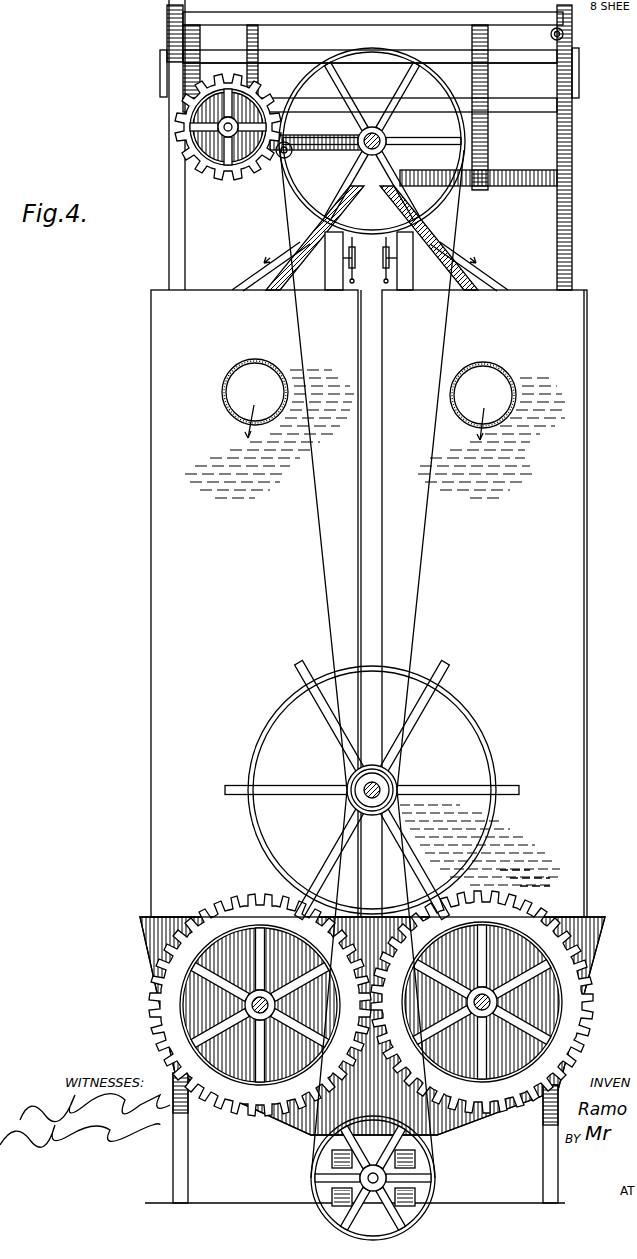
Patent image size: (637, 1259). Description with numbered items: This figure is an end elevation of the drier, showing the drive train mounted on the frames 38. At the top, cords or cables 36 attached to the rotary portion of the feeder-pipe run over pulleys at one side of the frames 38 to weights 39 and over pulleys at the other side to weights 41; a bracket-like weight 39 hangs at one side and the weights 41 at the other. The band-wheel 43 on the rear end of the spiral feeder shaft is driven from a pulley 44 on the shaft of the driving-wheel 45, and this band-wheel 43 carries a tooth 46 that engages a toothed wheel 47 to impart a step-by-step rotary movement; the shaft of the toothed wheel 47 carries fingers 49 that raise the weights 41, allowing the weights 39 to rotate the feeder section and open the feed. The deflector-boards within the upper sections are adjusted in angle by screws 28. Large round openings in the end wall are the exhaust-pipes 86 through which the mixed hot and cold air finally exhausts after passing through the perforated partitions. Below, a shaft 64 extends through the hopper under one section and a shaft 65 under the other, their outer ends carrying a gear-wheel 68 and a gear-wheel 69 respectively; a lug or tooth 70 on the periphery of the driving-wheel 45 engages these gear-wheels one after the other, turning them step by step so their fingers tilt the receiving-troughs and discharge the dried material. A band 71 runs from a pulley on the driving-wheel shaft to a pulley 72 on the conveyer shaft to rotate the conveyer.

The screws 28 is at (370, 266).
The cords or cables 36 is at (495, 63).
The frames 38 is at (170, 227).
The weights 39 is at (580, 75).
The weights 41 is at (166, 66).
The band-wheel 43 is at (438, 200).
The pulley 44 is at (394, 784).
The driving-wheel 45 is at (480, 729).
The tooth 46 is at (284, 160).
The toothed wheel 47 is at (233, 182).
The fingers 49 is at (160, 94).
The shaft 64 is at (257, 1010).
The shaft 65 is at (492, 1003).
The gear-wheel 68 is at (229, 897).
The gear-wheel 69 is at (578, 984).
The lug or tooth 70 is at (474, 878).
The band 71 is at (437, 1137).
The pulley 72 is at (422, 1166).
The exhaust-pipes 86 is at (254, 360).